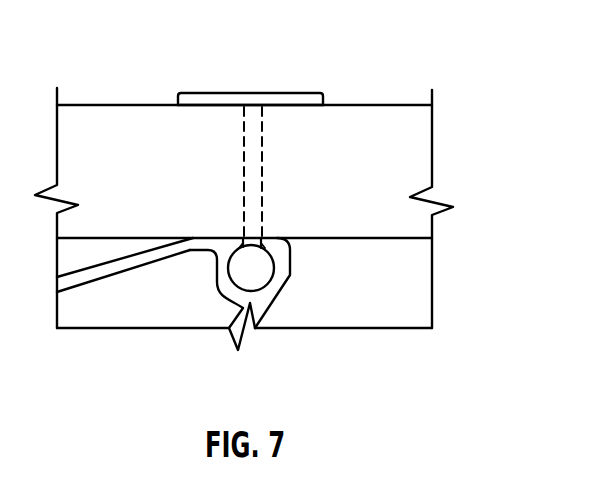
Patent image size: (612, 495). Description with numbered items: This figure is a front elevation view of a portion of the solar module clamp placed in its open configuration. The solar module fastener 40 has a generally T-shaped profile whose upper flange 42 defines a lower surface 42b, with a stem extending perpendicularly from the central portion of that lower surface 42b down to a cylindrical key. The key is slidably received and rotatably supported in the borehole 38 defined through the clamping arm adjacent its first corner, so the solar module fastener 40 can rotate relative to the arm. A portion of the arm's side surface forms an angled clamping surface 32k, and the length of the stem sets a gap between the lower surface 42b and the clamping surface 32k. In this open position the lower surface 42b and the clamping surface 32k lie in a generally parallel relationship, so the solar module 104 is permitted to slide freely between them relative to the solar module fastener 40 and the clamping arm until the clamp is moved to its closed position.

The solar module fastener 40 is at (314, 60).
The upper flange 42 is at (221, 82).
The lower surface 42b is at (210, 107).
The solar module 104 is at (425, 135).
The clamping surface 32k is at (234, 238).
The borehole 38 is at (274, 267).